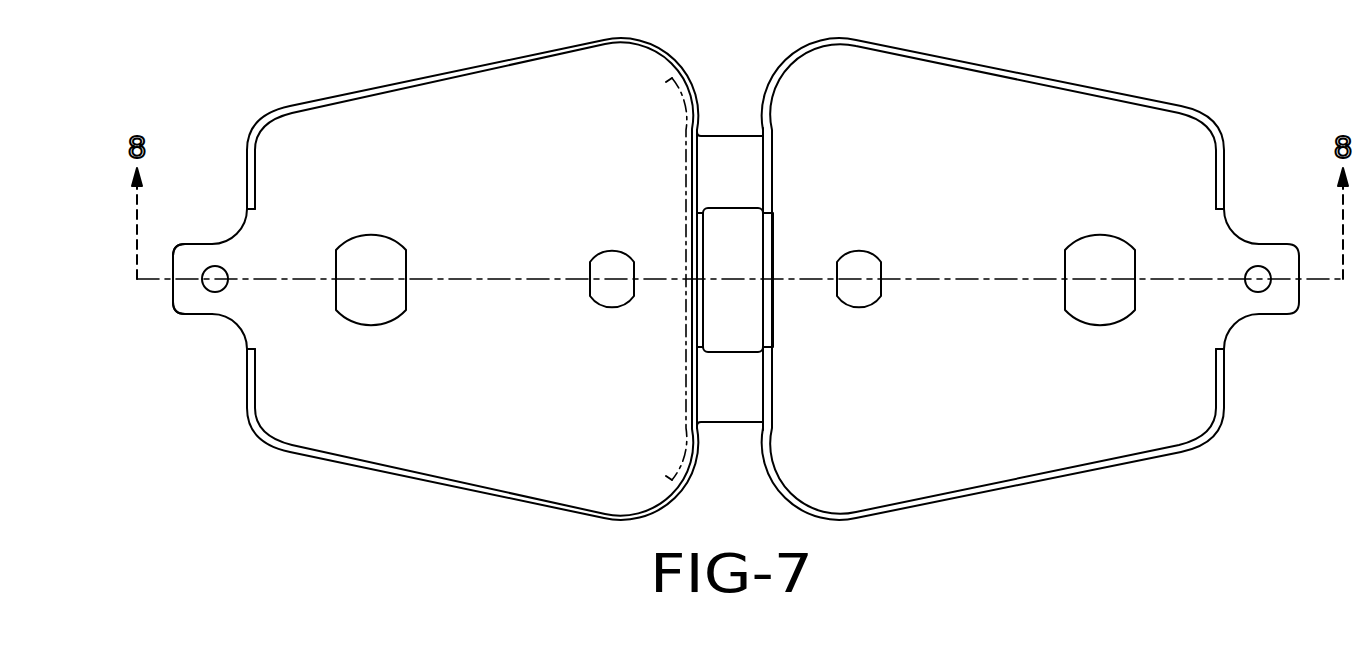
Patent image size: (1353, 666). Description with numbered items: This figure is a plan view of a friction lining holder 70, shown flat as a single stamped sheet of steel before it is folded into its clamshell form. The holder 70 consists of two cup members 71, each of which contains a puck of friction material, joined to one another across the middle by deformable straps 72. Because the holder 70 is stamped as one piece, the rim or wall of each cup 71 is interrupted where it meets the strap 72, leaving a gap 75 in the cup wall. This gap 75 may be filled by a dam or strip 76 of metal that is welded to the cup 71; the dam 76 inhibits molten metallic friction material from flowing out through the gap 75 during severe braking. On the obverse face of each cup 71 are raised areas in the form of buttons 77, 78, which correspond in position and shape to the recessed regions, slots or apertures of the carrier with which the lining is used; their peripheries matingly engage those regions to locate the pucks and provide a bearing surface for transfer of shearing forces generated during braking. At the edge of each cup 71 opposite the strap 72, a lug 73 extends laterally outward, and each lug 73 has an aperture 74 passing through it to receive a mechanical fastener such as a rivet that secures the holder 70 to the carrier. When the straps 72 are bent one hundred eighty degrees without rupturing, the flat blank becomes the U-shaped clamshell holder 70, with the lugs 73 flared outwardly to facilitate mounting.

The holder 70 is at (340, 69).
The cup member 71 is at (516, 392).
The deformable strap 72 is at (735, 134).
The lug 73 is at (180, 313).
The aperture 74 is at (215, 268).
The gap 75 is at (763, 178).
The dam 76 is at (688, 160).
The button 77 is at (609, 252).
The button 78 is at (380, 237).